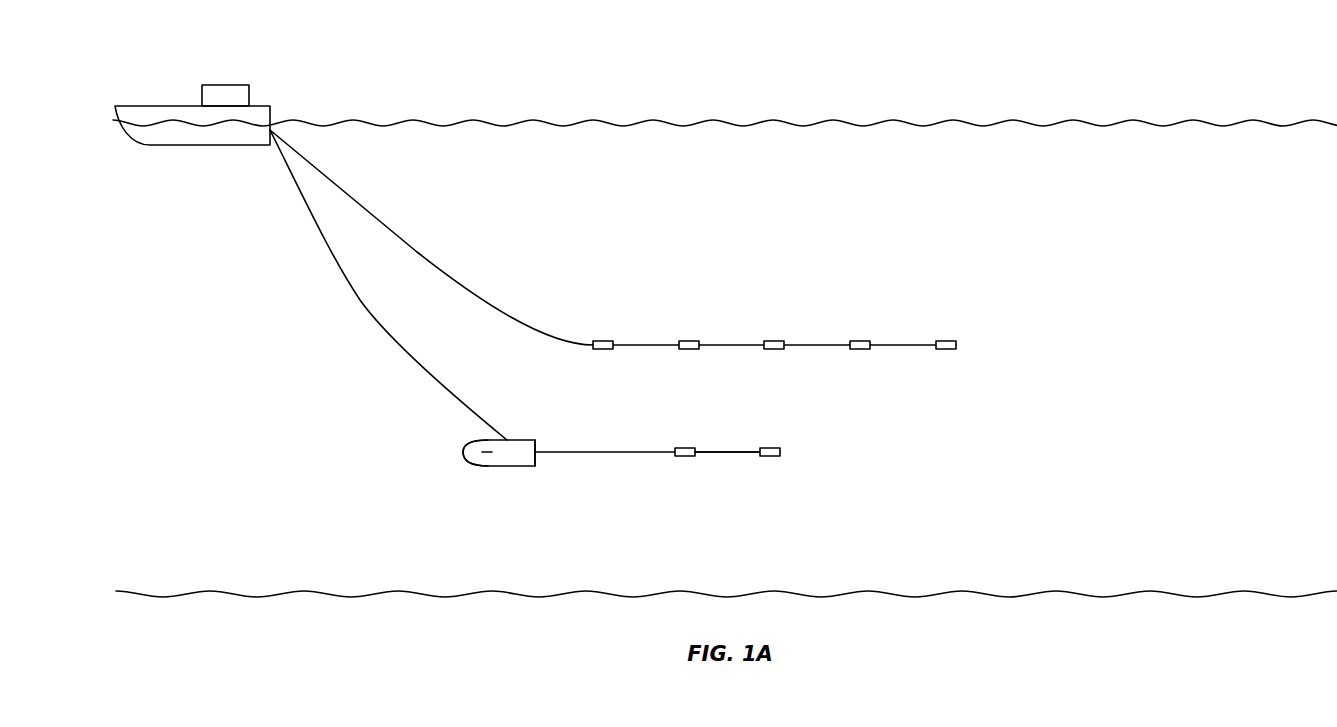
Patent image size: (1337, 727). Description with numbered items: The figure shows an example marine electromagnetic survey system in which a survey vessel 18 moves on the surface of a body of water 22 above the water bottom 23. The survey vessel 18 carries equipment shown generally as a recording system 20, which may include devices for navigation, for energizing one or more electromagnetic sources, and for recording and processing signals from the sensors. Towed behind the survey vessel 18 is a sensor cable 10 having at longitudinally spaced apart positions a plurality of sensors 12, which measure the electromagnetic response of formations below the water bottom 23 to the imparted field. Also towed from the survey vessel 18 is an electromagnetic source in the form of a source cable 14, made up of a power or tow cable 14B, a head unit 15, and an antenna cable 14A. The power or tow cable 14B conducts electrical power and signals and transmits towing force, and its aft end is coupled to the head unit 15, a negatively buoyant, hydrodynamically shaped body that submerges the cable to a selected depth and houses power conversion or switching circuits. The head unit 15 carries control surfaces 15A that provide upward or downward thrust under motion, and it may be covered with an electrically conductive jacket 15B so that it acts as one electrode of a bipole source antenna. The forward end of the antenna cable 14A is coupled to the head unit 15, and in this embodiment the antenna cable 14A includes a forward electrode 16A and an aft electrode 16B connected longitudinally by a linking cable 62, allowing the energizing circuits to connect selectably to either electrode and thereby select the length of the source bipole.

The sensor cable 10 is at (414, 252).
The sensors 12 is at (603, 340).
The source cable 14 is at (313, 346).
The antenna cable 14A is at (614, 454).
The power or tow cable 14B is at (389, 334).
The head unit 15 is at (511, 467).
The control surfaces 15A is at (489, 447).
The electrically conductive jacket 15B is at (525, 440).
The forward electrode 16A is at (687, 447).
The aft electrode 16B is at (772, 448).
The survey vessel 18 is at (158, 106).
The recording system 20 is at (225, 85).
The body of water 22 is at (1121, 219).
The water bottom 23 is at (1077, 592).
The linking cable 62 is at (728, 452).